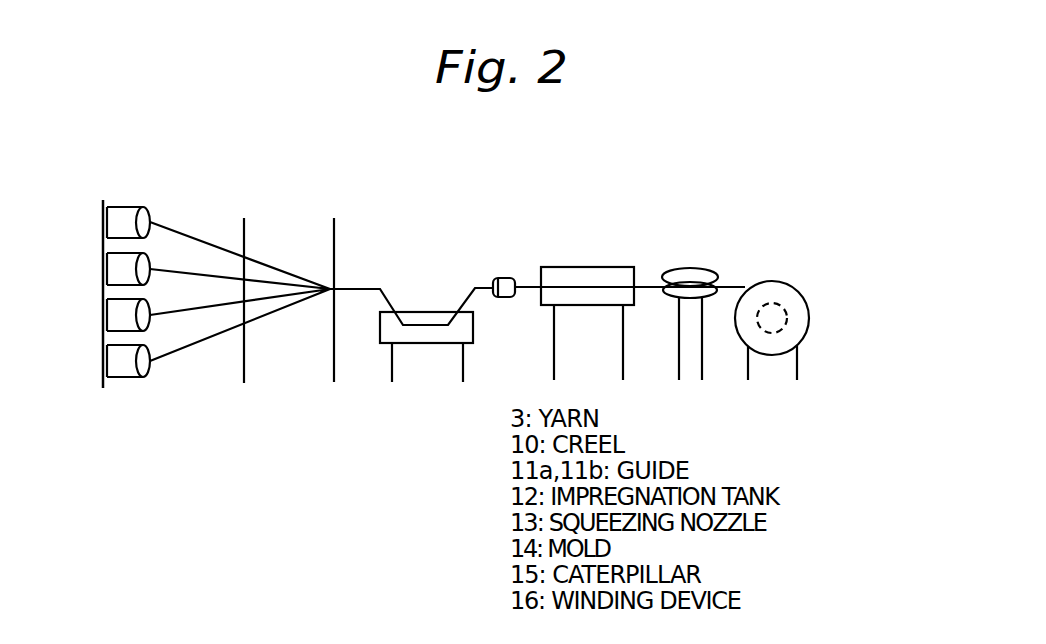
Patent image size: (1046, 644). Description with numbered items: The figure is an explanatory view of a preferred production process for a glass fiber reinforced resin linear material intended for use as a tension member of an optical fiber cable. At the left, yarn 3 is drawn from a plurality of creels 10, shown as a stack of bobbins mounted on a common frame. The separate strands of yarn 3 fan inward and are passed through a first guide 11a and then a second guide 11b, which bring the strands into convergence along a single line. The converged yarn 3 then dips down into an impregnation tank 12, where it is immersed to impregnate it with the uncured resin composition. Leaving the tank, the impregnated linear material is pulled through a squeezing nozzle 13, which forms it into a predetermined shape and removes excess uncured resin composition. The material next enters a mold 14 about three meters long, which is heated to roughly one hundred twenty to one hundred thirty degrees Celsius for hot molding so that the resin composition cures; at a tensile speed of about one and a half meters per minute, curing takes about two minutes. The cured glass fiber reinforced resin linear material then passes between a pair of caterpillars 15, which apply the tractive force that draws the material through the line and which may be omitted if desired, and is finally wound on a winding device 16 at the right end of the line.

The yarn 3 is at (188, 237).
The creel 10 is at (129, 212).
The guide 11a is at (247, 228).
The guide 11b is at (338, 228).
The impregnation tank 12 is at (425, 315).
The squeezing nozzle 13 is at (501, 278).
The mold 14 is at (590, 268).
The caterpillar 15 is at (686, 276).
The winding device 16 is at (775, 292).